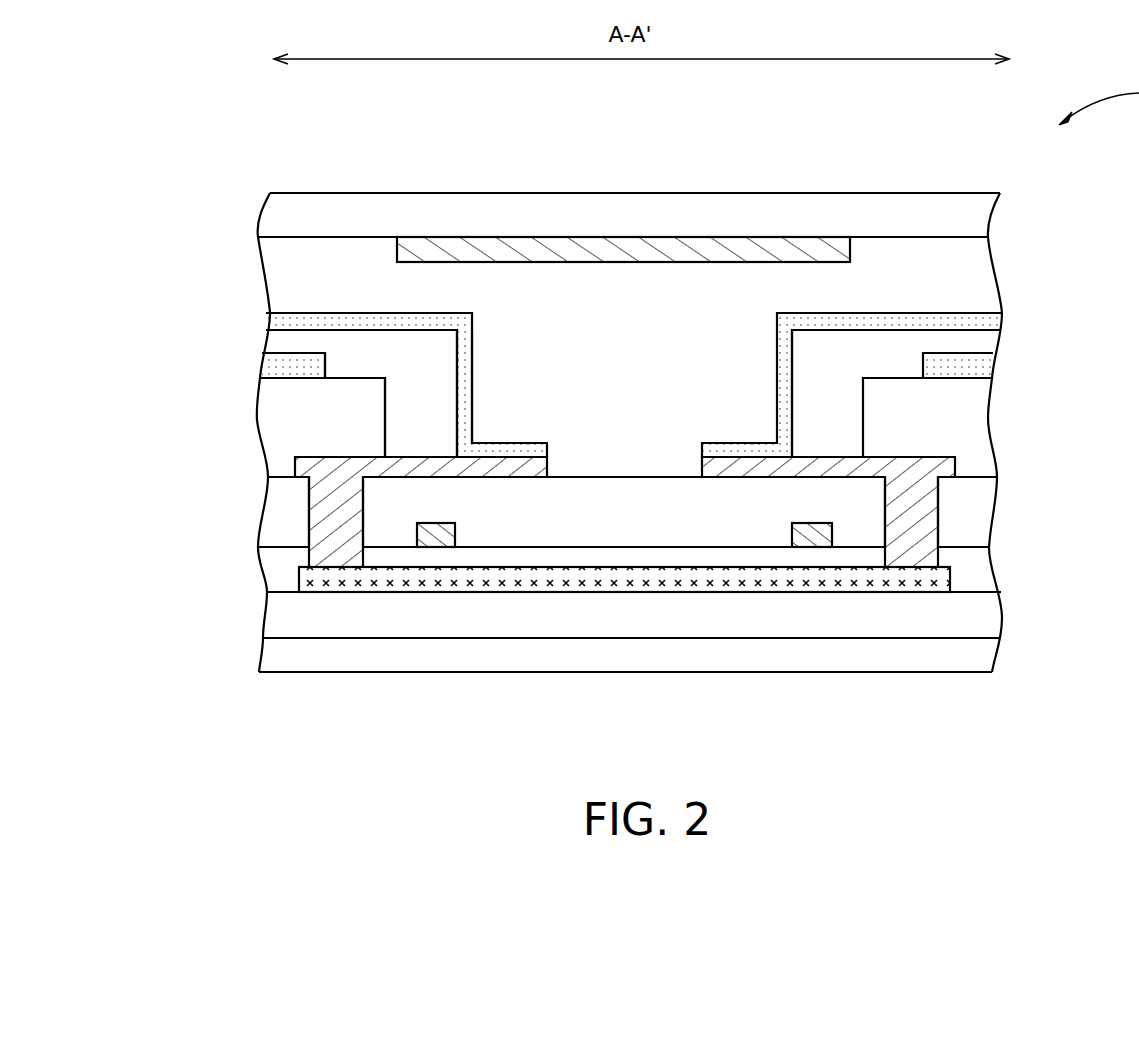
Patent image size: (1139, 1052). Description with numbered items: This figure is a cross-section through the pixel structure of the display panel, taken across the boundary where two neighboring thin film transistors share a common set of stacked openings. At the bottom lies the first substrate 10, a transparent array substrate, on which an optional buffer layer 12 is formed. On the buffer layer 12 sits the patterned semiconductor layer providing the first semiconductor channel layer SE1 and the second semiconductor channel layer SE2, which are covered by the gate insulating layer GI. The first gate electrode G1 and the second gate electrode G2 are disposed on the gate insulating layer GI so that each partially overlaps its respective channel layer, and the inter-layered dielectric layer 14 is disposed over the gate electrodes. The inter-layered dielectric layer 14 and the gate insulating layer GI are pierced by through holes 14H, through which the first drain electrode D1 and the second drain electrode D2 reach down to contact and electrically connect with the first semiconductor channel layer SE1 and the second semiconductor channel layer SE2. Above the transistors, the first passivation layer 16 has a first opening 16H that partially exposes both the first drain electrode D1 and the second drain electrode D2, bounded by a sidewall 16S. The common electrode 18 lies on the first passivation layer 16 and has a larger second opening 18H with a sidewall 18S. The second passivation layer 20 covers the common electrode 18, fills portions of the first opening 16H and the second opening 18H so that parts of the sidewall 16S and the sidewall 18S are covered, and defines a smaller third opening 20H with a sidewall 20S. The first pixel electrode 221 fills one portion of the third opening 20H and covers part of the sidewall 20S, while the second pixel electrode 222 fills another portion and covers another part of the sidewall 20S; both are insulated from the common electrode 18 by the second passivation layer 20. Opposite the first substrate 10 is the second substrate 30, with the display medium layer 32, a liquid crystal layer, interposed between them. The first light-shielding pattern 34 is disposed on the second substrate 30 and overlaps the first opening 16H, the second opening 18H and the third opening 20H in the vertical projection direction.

The first substrate 10 is at (975, 658).
The buffer layer 12 is at (975, 618).
The gate insulating layer GI is at (975, 560).
The inter-layered dielectric layer 14 is at (975, 522).
The through holes 14H is at (340, 474).
The first passivation layer 16 is at (978, 418).
The first opening 16H is at (385, 397).
The sidewall of the first passivation layer 16S is at (386, 443).
The common electrode 18 is at (988, 368).
The second opening 18H is at (325, 371).
The sidewall of the common electrode 18S is at (328, 353).
The second passivation layer 20 is at (983, 342).
The third opening 20H is at (457, 338).
The sidewall of the second passivation layer 20S is at (462, 418).
The first pixel electrode 221 is at (988, 318).
The second pixel electrode 222 is at (277, 323).
The second substrate 30 is at (983, 219).
The display medium layer 32 is at (983, 283).
The first light-shielding pattern 34 is at (843, 250).
The first drain electrode D1 is at (912, 556).
The second drain electrode D2 is at (340, 562).
The first semiconductor channel layer SE1 is at (856, 582).
The second semiconductor channel layer SE2 is at (388, 580).
The first gate electrode G1 is at (808, 538).
The second gate electrode G2 is at (440, 532).